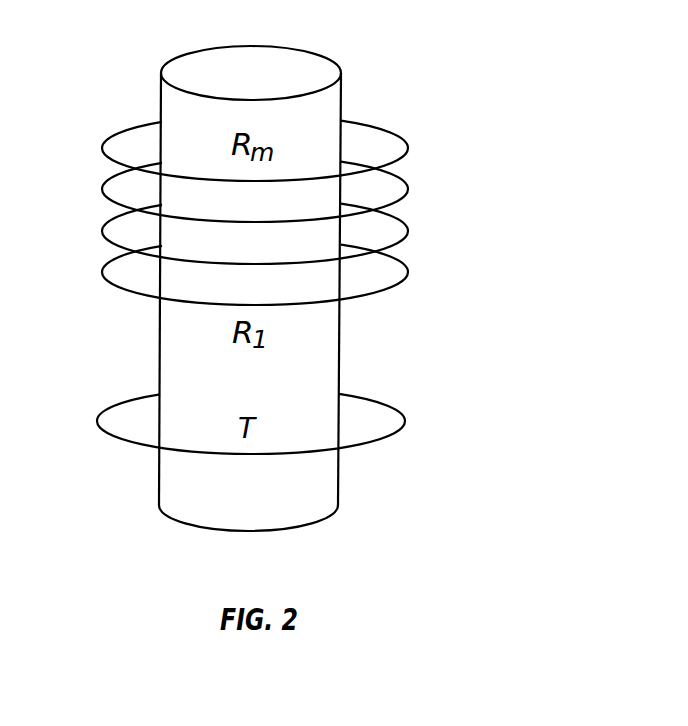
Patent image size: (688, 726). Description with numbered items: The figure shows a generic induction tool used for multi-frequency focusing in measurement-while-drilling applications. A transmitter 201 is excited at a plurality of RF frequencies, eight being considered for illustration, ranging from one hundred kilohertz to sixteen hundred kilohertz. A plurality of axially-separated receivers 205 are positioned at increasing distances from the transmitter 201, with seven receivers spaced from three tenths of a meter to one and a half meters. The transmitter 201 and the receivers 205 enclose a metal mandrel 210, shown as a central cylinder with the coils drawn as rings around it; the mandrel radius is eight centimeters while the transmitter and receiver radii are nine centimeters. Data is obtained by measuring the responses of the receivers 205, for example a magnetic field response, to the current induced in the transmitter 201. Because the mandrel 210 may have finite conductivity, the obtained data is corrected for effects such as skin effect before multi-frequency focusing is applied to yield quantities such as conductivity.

The metal mandrel 210 is at (312, 522).
The receivers 205 is at (430, 135).
The transmitter 201 is at (404, 417).